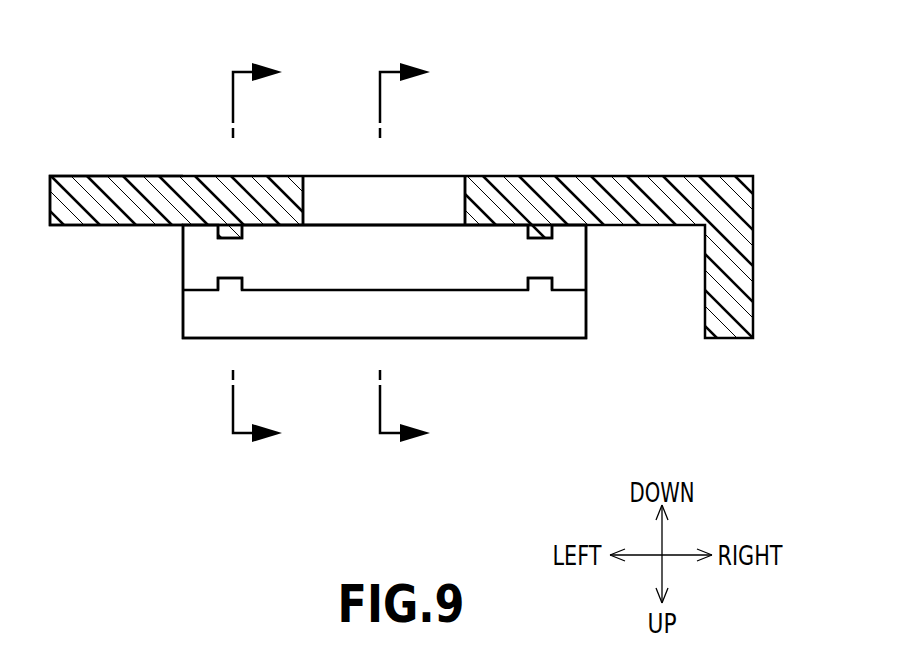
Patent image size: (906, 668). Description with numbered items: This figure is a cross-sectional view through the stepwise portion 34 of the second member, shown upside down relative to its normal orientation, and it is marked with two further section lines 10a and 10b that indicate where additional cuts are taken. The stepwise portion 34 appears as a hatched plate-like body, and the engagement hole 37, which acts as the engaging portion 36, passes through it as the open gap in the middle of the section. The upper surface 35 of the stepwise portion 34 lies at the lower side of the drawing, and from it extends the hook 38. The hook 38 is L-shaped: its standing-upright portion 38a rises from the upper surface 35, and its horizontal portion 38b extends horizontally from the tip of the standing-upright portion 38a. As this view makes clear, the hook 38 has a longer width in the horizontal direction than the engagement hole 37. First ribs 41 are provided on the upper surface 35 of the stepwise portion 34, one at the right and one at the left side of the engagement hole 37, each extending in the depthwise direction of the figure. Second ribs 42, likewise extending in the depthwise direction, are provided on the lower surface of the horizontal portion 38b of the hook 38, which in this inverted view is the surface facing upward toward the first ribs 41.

The cross-section line 10a is at (242, 256).
The cross-section line 10b is at (408, 256).
The stepwise portion 34 is at (668, 176).
The upper surface 35 is at (80, 227).
The engaging portion 36 is at (464, 188).
The engagement hole 37 is at (384, 200).
The hook 38 is at (181, 312).
The standing-upright portion 38a is at (573, 258).
The horizontal portion 38b is at (573, 317).
The first ribs 41 is at (244, 232).
The second ribs 42 is at (243, 282).